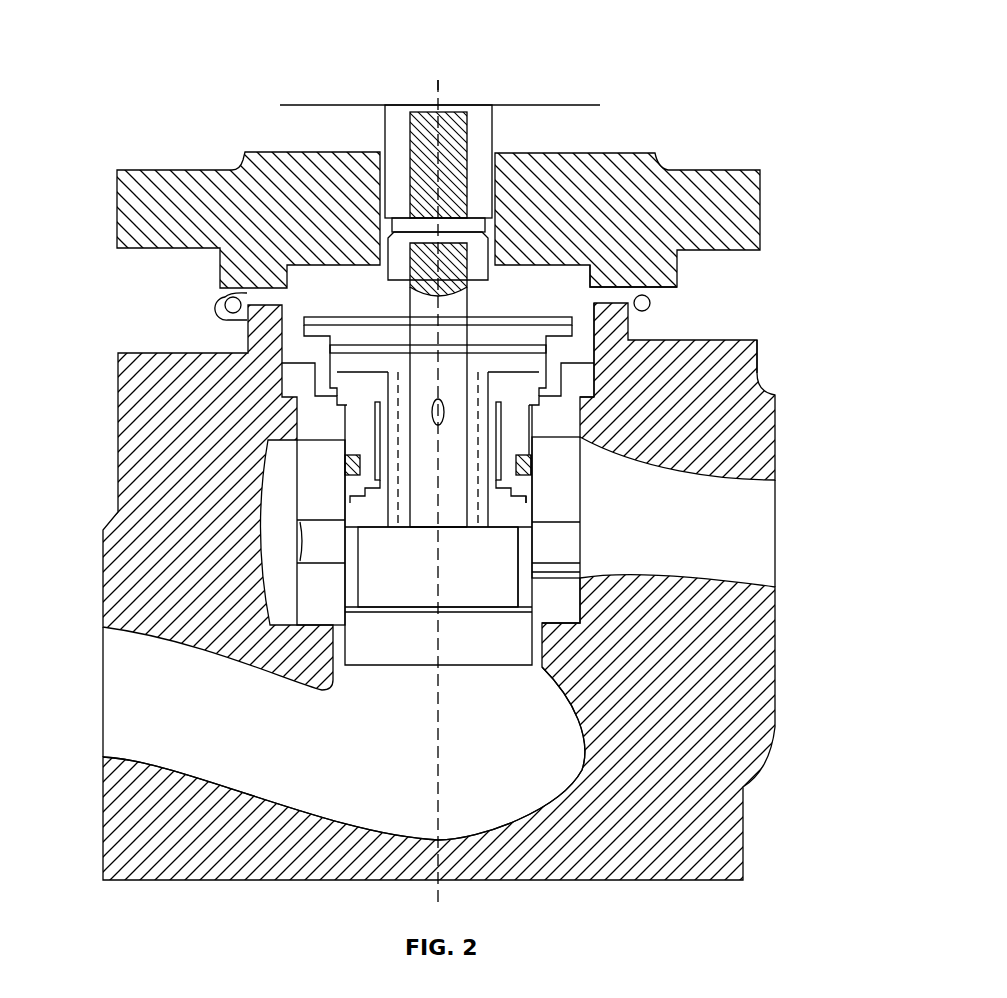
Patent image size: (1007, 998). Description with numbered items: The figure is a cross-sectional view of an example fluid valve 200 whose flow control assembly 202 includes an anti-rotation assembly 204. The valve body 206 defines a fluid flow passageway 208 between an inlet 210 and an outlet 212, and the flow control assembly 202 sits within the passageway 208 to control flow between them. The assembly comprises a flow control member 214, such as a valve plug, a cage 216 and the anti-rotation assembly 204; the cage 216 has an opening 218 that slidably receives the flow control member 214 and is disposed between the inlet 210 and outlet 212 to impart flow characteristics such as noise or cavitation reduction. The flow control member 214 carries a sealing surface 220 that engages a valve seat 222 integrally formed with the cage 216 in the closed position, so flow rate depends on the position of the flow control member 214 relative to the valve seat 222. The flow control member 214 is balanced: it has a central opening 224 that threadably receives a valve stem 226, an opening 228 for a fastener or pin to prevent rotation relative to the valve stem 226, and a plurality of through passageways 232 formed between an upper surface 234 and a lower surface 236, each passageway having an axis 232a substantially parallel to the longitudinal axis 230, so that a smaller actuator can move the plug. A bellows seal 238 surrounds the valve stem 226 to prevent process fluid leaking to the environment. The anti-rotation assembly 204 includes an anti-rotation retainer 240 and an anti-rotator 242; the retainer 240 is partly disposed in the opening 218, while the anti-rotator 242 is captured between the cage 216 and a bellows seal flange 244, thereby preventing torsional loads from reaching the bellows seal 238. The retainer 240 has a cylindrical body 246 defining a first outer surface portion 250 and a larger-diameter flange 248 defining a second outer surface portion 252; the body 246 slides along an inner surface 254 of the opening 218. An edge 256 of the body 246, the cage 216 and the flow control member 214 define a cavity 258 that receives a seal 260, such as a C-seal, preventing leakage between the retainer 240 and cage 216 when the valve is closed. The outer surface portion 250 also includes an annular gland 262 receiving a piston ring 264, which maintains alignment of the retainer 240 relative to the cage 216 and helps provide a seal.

The fluid valve 200 is at (745, 29).
The flow control assembly 202 is at (258, 355).
The anti-rotation assembly 204 is at (520, 325).
The valve body 206 is at (350, 880).
The fluid flow passageway 208 is at (362, 772).
The inlet 210 is at (103, 680).
The outlet 212 is at (775, 532).
The flow control member 214 is at (350, 552).
The cage 216 is at (563, 495).
The opening 218 is at (395, 408).
The sealing surface 220 is at (340, 602).
The valve seat 222 is at (343, 610).
The central opening 224 is at (452, 527).
The valve stem 226 is at (410, 133).
The opening 228 is at (436, 399).
The longitudinal axis 230 is at (437, 545).
The through passageways 232 is at (330, 400).
The axis 232a is at (350, 405).
The upper surface 234 is at (575, 321).
The lower surface 236 is at (502, 530).
The bellows seal 238 is at (493, 138).
The anti-rotation retainer 240 is at (660, 445).
The anti-rotator 242 is at (600, 346).
The bellows seal flange 244 is at (592, 288).
The body 246 is at (530, 448).
The flange 248 is at (565, 380).
The first outer surface portion 250 is at (540, 478).
The second outer surface portion 252 is at (548, 402).
The inner surface 254 is at (670, 462).
The edge 256 is at (345, 503).
The cavity 258 is at (345, 500).
The seal 260 is at (533, 513).
The annular gland 262 is at (345, 400).
The piston ring 264 is at (528, 460).